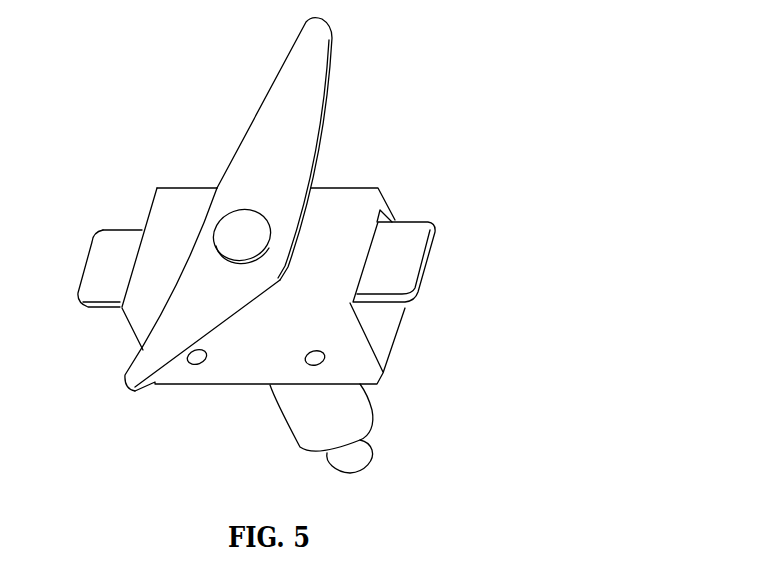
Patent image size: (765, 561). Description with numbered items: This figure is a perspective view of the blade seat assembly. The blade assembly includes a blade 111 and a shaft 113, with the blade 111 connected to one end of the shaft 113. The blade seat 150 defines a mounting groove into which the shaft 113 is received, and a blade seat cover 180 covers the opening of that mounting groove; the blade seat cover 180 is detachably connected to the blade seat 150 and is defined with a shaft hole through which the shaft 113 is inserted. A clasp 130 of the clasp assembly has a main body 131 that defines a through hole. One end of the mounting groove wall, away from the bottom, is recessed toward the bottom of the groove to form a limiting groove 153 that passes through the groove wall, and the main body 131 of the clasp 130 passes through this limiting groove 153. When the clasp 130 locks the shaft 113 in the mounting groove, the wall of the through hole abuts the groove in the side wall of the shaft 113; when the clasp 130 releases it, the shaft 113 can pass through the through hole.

The blade 111 is at (302, 108).
The shaft 113 is at (250, 223).
The clasp 130 is at (82, 253).
The main body 131 is at (120, 248).
The blade seat 150 is at (347, 398).
The limiting groove 153 is at (360, 305).
The blade seat cover 180 is at (347, 203).